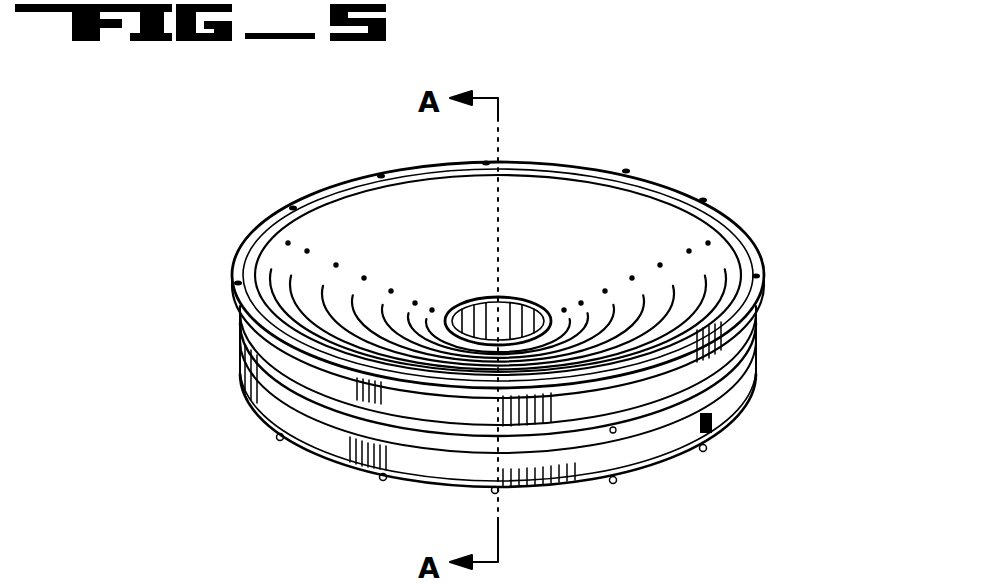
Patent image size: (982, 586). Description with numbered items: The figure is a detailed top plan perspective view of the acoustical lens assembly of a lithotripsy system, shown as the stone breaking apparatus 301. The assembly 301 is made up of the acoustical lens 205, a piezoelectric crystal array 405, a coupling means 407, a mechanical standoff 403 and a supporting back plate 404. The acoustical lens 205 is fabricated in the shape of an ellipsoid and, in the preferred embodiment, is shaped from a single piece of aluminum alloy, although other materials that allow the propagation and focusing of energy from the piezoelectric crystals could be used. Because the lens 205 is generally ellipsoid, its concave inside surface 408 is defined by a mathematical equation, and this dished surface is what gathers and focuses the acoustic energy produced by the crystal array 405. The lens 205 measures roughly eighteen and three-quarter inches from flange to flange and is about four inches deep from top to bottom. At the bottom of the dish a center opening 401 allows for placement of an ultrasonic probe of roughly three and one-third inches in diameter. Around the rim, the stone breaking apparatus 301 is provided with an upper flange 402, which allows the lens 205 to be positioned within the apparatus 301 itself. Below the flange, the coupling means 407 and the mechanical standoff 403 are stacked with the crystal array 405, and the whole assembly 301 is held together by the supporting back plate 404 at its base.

The stone breaking apparatus 301 is at (312, 126).
The center opening 401 is at (510, 328).
The upper flange 402 is at (736, 237).
The mechanical standoff 403 is at (262, 405).
The supporting back plate 404 is at (660, 462).
The piezoelectric crystal array 405 is at (612, 440).
The coupling means 407 is at (733, 423).
The concave inside surface 408 is at (603, 228).
The acoustical lens 205 is at (750, 350).